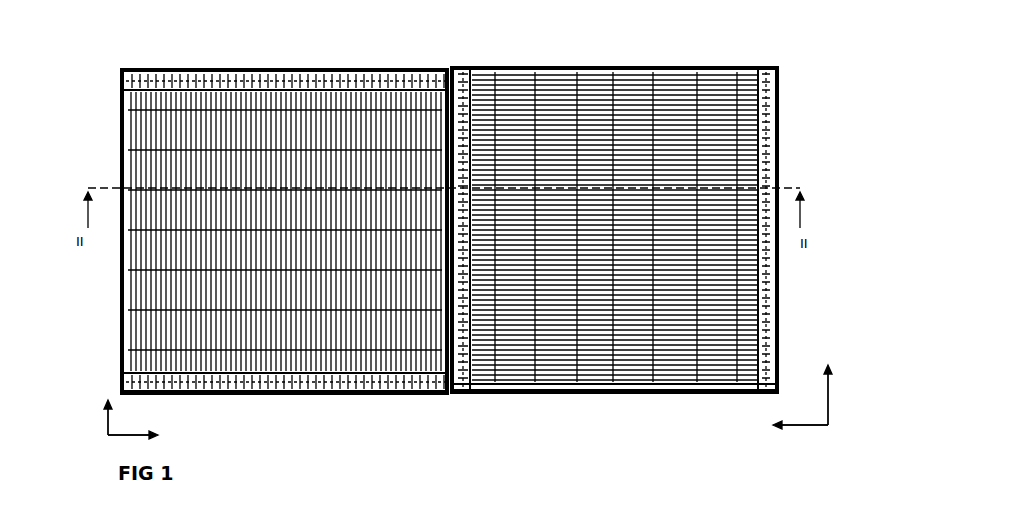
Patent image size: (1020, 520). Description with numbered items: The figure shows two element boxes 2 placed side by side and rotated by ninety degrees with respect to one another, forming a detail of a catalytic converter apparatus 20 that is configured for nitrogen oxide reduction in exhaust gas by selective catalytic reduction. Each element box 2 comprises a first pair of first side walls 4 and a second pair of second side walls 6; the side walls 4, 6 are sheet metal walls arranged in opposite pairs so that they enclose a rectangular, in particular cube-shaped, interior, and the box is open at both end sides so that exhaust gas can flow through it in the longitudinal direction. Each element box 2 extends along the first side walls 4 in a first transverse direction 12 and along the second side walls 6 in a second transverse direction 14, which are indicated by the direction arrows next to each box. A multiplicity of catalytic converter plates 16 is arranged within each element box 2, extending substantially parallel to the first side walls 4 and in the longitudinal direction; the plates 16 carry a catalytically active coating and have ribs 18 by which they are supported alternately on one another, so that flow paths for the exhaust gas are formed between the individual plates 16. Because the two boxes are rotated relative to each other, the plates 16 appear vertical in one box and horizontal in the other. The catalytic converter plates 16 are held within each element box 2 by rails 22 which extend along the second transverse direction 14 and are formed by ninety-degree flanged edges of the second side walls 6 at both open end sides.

The element box 2 is at (352, 408).
The first side walls 4 is at (120, 305).
The second side walls 6 is at (243, 72).
The first transverse direction 12 is at (105, 432).
The second transverse direction 14 is at (135, 428).
The catalytic converter plates 16 is at (410, 72).
The ribs 18 is at (413, 392).
The catalytic converter apparatus 20 is at (824, 60).
The rails 22 is at (315, 70).